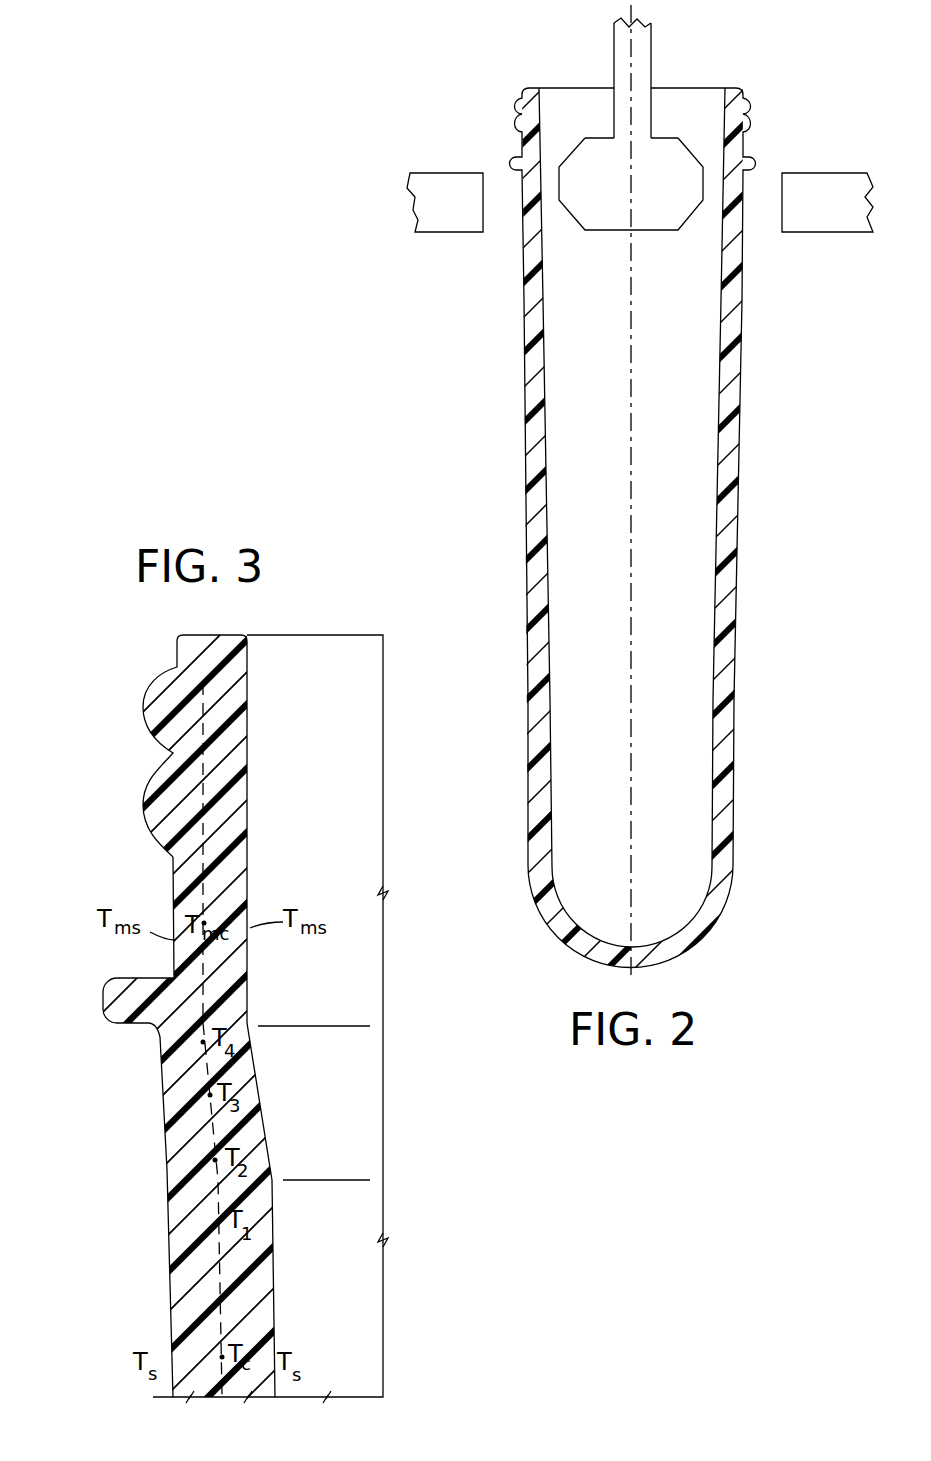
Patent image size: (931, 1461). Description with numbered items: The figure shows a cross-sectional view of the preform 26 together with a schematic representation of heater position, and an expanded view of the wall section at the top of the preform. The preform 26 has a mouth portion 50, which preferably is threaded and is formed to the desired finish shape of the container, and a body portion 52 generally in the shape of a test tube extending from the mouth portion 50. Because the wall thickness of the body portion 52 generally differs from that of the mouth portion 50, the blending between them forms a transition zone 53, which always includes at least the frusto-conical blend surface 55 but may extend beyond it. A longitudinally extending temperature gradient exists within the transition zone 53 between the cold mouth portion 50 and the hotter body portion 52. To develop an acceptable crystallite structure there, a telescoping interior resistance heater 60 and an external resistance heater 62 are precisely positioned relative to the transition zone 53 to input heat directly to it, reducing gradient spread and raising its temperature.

In FIG. 2, the preform 26 is at (505, 480).
In FIG. 2, the mouth portion 50 is at (747, 133).
In FIG. 3, the mouth portion 50 is at (173, 763).
In FIG. 2, the body portion 52 is at (735, 638).
In FIG. 3, the body portion 52 is at (170, 1327).
In FIG. 2, the transition zone 53 is at (543, 173).
In FIG. 3, the transition zone 53 is at (150, 1108).
In FIG. 3, the frusto-conical blend surface 55 is at (260, 1090).
In FIG. 2, the telescoping interior resistance heater 60 is at (642, 70).
In FIG. 2, the external resistance heater 62 is at (813, 217).